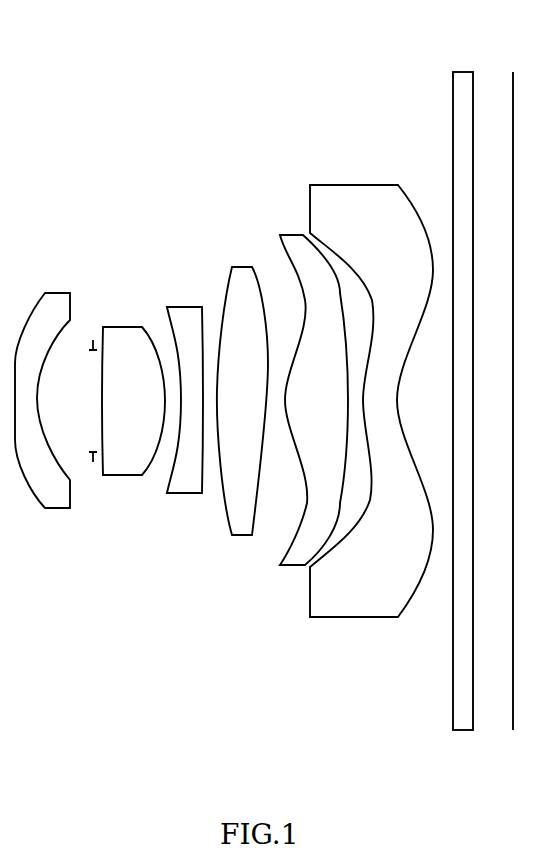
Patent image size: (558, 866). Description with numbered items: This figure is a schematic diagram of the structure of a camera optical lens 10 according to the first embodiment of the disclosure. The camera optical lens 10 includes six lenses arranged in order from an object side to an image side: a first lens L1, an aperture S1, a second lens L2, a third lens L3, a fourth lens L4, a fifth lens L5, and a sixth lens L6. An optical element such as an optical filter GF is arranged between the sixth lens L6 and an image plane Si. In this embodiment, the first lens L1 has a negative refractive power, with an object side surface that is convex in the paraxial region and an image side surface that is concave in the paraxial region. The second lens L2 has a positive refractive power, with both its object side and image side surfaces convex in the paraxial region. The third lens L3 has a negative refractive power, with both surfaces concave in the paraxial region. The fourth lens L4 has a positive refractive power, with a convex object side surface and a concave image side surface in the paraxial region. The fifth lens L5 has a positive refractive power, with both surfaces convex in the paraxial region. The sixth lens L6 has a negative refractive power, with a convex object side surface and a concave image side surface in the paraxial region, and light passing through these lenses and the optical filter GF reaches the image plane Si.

The camera optical lens 10 is at (272, 43).
The first lens L1 is at (43, 388).
The aperture S1 is at (87, 383).
The second lens L2 is at (133, 389).
The third lens L3 is at (185, 387).
The fourth lens L4 is at (242, 389).
The fifth lens L5 is at (314, 387).
The sixth lens L6 is at (371, 387).
The optical filter GF is at (461, 387).
The image plane Si is at (514, 387).